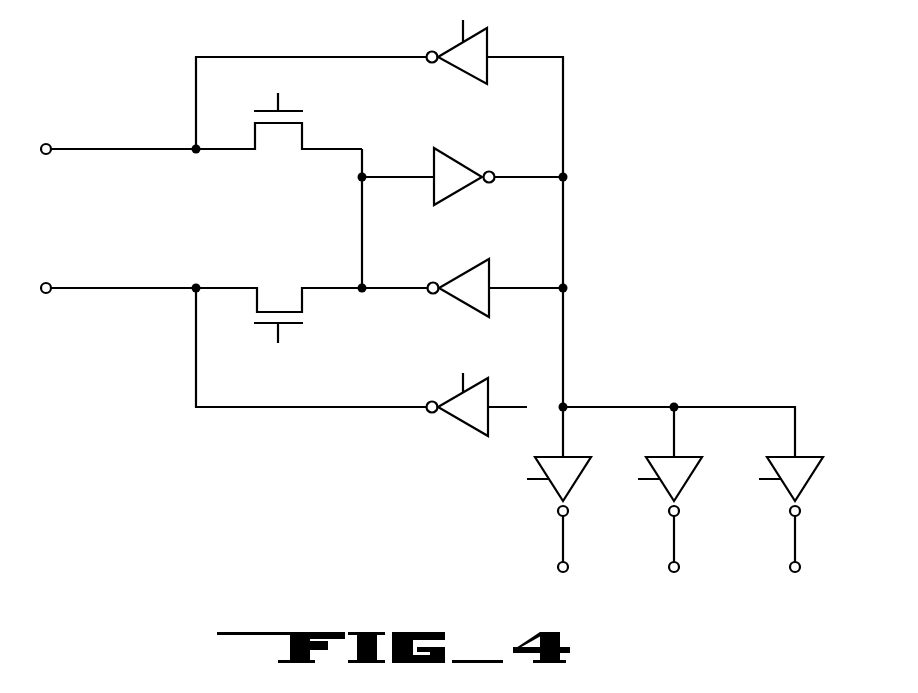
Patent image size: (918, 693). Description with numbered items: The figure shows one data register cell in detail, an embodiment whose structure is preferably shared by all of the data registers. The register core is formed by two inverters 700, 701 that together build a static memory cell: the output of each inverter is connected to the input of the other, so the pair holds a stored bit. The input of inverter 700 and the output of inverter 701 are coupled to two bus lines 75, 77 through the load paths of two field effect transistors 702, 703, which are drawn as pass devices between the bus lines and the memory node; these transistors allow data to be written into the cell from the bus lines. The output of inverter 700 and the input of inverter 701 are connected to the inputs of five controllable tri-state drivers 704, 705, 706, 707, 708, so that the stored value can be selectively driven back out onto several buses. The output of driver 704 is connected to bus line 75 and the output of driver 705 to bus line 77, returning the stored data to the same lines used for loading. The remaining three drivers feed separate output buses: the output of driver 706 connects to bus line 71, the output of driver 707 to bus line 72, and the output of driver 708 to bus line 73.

The bus line 75 is at (90, 148).
The bus line 77 is at (80, 288).
The field effect transistor 702 is at (307, 117).
The field effect transistor 703 is at (308, 316).
The inverter 700 is at (443, 147).
The inverter 701 is at (463, 303).
The controllable tri-state driver 704 is at (490, 40).
The controllable tri-state driver 705 is at (462, 425).
The controllable tri-state driver 706 is at (543, 488).
The controllable tri-state driver 707 is at (657, 488).
The controllable tri-state driver 708 is at (782, 487).
The bus line 71 is at (560, 552).
The bus line 72 is at (672, 551).
The bus line 73 is at (790, 551).